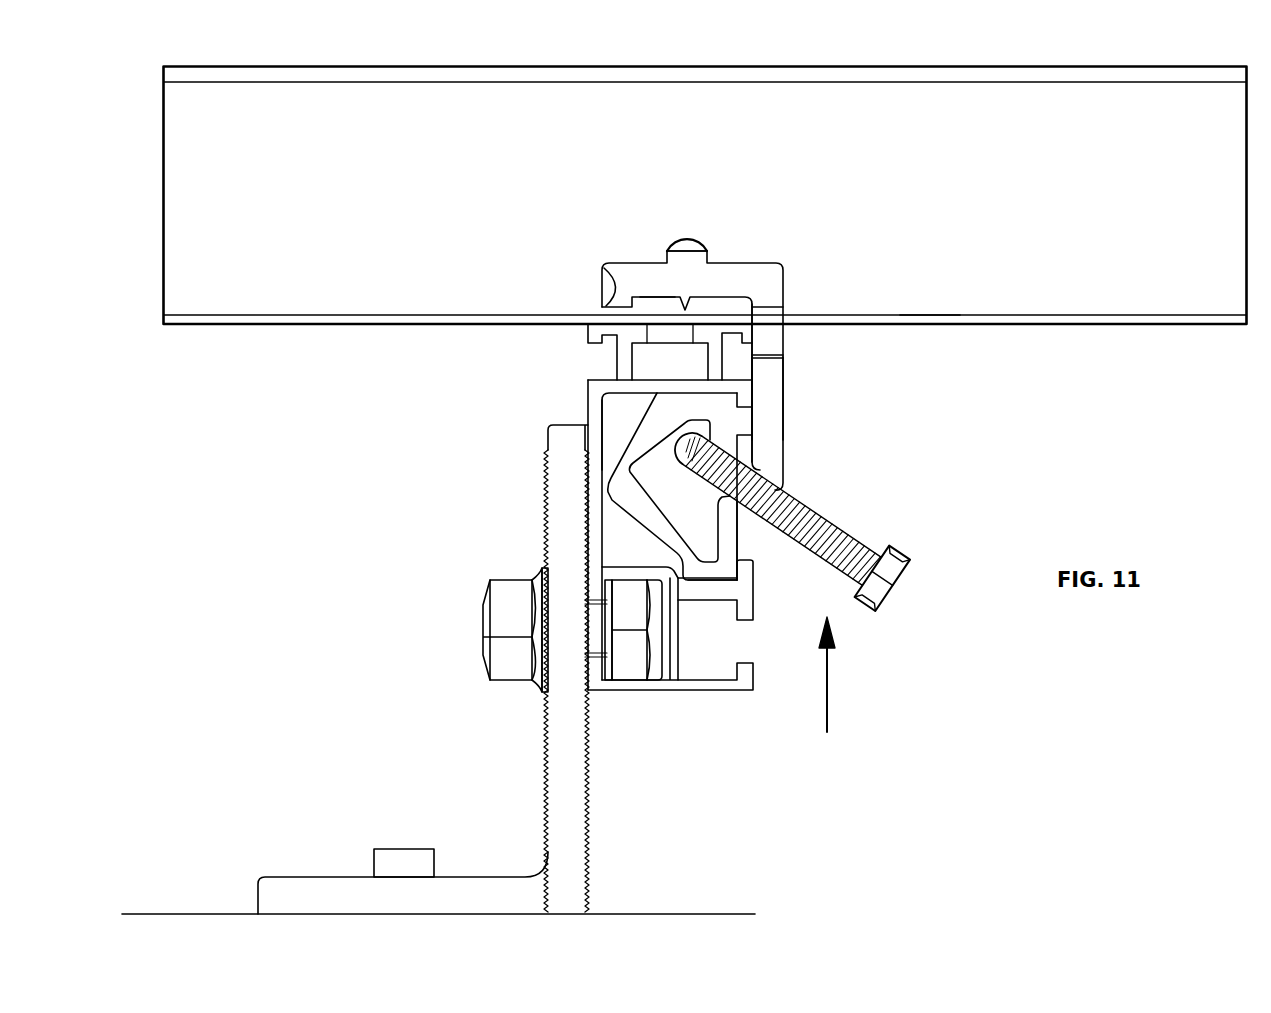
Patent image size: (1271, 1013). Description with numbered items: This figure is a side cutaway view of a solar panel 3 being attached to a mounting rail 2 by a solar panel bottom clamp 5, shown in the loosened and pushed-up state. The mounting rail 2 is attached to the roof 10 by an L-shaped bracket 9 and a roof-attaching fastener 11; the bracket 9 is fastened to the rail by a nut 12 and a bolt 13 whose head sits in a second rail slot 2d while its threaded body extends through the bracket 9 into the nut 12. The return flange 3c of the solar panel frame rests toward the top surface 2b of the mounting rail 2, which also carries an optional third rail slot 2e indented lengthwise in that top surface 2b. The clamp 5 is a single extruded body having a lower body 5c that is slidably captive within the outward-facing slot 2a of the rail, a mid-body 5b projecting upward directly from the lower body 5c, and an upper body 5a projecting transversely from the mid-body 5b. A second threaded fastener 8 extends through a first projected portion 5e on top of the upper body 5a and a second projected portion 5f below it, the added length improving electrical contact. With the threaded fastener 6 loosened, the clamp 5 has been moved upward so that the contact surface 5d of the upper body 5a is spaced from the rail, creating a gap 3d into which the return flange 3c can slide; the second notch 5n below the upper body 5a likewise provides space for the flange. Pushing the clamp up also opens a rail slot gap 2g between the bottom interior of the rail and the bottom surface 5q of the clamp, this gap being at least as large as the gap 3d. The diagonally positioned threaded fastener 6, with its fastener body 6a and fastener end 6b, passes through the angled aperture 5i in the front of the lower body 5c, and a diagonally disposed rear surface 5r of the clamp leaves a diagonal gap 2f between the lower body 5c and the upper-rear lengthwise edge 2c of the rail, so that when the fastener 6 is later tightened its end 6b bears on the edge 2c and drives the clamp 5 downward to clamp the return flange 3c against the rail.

The mounting rail 2 is at (661, 542).
The slot 2a is at (612, 527).
The top surface 2b is at (600, 327).
The upper-rear lengthwise edge 2c is at (610, 402).
The second rail slot 2d is at (665, 663).
The third rail slot 2e is at (642, 362).
The diagonal gap 2f is at (669, 485).
The rail slot gap 2g is at (740, 583).
The solar panel 3 is at (705, 172).
The return flange 3c is at (930, 312).
The gap 3d is at (610, 312).
The solar panel bottom clamp 5 is at (683, 414).
The upper body 5a is at (750, 262).
The mid-body 5b is at (785, 372).
The lower body 5c is at (740, 540).
The contact surface 5d is at (613, 283).
The first projected portion 5e is at (665, 252).
The second projected portion 5f is at (667, 300).
The aperture 5i is at (763, 470).
The second notch 5n is at (768, 322).
The bottom surface 5q is at (700, 583).
The diagonally disposed rear surface 5r is at (610, 462).
The threaded fastener 6 is at (802, 522).
The fastener body 6a is at (867, 547).
The fastener end 6b is at (684, 440).
The second threaded fastener 8 is at (697, 242).
The bracket 9 is at (588, 795).
The roof 10 is at (232, 912).
The roof-attaching fastener 11 is at (400, 850).
The nut 12 is at (508, 680).
The bolt 13 is at (626, 680).